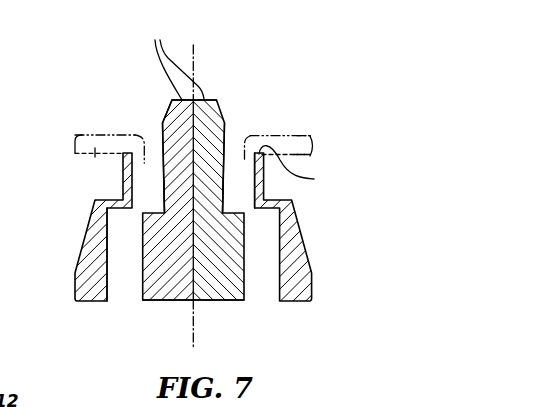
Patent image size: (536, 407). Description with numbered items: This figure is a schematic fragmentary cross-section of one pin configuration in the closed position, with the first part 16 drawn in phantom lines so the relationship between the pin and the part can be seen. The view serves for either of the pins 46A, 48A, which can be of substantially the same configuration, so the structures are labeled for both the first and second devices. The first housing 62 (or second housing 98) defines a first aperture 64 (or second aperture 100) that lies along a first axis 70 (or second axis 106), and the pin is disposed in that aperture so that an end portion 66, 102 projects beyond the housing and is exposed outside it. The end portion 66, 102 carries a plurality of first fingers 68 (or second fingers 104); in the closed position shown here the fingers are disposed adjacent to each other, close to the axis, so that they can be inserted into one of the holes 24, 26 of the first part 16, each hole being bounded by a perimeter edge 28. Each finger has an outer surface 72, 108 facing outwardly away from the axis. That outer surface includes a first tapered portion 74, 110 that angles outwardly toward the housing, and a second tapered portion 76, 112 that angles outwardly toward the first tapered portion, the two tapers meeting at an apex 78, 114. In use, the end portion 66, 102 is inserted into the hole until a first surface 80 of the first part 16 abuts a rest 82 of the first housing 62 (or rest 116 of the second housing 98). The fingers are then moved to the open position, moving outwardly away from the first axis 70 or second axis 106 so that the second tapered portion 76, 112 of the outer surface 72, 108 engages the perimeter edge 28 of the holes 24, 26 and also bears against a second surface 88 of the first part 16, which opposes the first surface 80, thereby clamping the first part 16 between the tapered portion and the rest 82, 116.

The first part 16 is at (95, 148).
The first hole 24 is at (286, 152).
The second hole 26 is at (244, 135).
The perimeter edge 28 is at (193, 161).
The first pin 46A is at (210, 164).
The second pin 48A is at (219, 85).
The first housing 62 is at (144, 225).
The second housing 98 is at (77, 260).
The first aperture 64 is at (251, 238).
The second aperture 100 is at (126, 283).
The end portion 66 is at (166, 60).
The end portion 102 is at (166, 60).
The first fingers 68 is at (221, 327).
The second fingers 104 is at (163, 291).
The first axis 70 is at (247, 206).
The second axis 106 is at (200, 320).
The outer surface 72 is at (197, 194).
The outer surface 108 is at (156, 194).
The first tapered portion 74 is at (242, 78).
The first tapered portion 110 is at (222, 106).
The second tapered portion 76 is at (190, 145).
The second tapered portion 112 is at (225, 131).
The apex 78 is at (122, 98).
The apex 114 is at (161, 126).
The first surface 80 is at (294, 155).
The rest 82 is at (312, 168).
The rest 116 is at (312, 168).
The second surface 88 is at (297, 136).